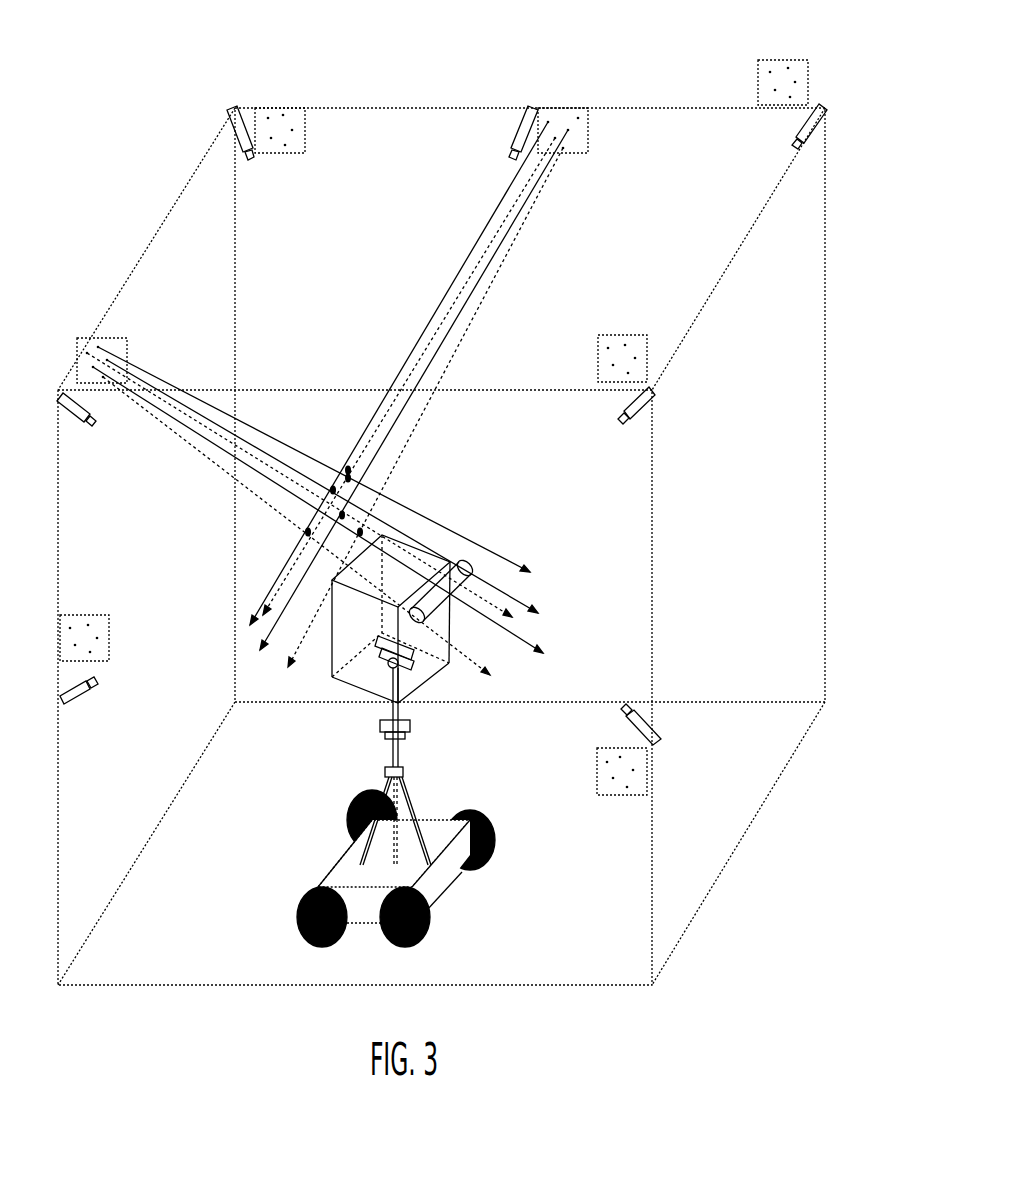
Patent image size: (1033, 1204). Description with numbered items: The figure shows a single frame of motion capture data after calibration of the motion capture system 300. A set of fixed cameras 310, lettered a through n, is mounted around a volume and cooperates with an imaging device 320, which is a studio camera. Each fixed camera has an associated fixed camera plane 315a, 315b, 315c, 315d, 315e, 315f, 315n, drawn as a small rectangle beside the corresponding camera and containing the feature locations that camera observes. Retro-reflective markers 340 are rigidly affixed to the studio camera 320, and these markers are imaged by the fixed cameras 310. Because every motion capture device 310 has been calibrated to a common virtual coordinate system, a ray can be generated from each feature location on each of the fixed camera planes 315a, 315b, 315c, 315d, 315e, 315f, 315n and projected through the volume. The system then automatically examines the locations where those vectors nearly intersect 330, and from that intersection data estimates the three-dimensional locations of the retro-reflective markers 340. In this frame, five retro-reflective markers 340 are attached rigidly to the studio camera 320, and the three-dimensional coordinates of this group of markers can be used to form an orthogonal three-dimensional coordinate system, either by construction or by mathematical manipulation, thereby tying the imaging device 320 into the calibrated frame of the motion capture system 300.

The motion capture system 300 is at (368, 70).
The fixed cameras 310 is at (797, 190).
The fixed camera plane 315a is at (636, 322).
The fixed camera plane 315b is at (787, 56).
The fixed camera plane 315c is at (578, 102).
The fixed camera plane 315d is at (292, 149).
The fixed camera plane 315e is at (107, 326).
The fixed camera plane 315f is at (91, 605).
The fixed camera plane 315n is at (622, 771).
The imaging device 320 is at (331, 678).
The ray intersection locations 330 is at (347, 468).
The retro-reflective markers 340 is at (331, 533).